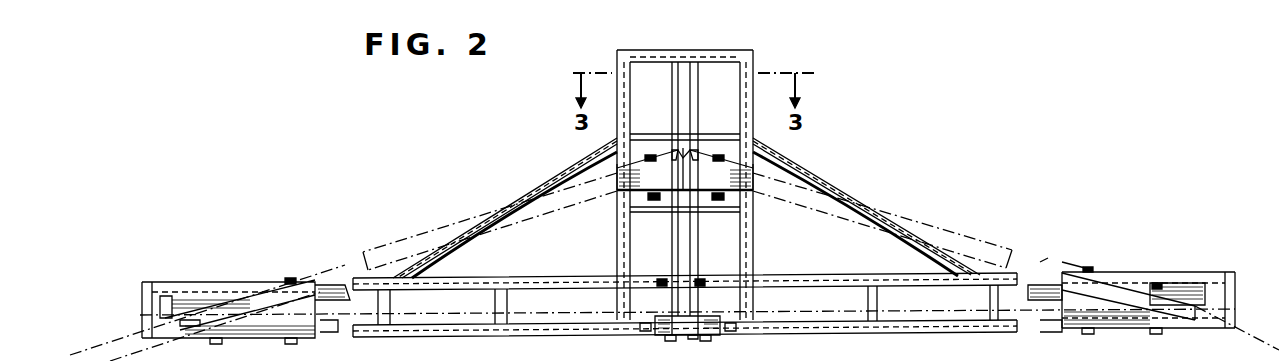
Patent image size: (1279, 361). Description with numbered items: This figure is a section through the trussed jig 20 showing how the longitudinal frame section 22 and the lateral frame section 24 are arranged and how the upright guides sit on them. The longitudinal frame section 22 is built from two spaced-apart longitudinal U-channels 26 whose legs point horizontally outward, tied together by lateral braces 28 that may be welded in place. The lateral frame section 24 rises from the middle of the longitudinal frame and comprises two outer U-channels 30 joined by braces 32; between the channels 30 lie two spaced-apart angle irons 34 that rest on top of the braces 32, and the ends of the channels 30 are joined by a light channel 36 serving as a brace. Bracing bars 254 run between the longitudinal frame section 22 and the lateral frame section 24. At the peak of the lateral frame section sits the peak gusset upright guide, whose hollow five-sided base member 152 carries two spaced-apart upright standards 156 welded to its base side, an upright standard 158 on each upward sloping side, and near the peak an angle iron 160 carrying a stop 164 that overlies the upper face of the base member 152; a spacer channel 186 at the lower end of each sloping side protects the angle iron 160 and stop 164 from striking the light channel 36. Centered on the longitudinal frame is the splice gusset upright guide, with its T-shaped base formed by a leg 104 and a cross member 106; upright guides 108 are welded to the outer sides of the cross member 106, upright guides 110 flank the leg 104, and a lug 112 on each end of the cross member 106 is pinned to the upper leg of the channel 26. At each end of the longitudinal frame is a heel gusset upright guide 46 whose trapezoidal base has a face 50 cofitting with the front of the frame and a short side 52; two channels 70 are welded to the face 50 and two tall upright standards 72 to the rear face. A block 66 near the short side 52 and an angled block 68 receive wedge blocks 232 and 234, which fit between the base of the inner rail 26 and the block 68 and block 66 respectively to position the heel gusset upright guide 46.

The trussed jig 20 is at (676, 44).
The longitudinal frame section 22 is at (565, 342).
The lateral frame section 24 is at (616, 268).
The longitudinal U-channel 26 is at (485, 284).
The lateral brace 28 is at (141, 302).
The outer U-channel 30 is at (618, 54).
The brace 32 is at (718, 133).
The angle iron 34 is at (672, 79).
The light channel 36 is at (707, 56).
The heel gusset upright guide 46 is at (1120, 345).
The face 50 is at (270, 345).
The short side 52 is at (185, 335).
The block 66 is at (162, 307).
The block 68 is at (1039, 308).
The channel 70 is at (215, 345).
The upright standard 72 is at (1088, 267).
The leg 104 is at (692, 301).
The cross member 106 is at (718, 333).
The upright guide 108 is at (668, 341).
The upright guide 110 is at (664, 279).
The lug 112 is at (642, 331).
The base member 152 is at (753, 187).
The upright standard 156 is at (654, 201).
The upright standard 158 is at (658, 152).
The angle iron 160 is at (678, 160).
The stop 164 is at (683, 176).
The spacer channel 186 is at (617, 149).
The block 232 is at (225, 290).
The block 234 is at (1030, 287).
The bracing bar 254 is at (578, 164).